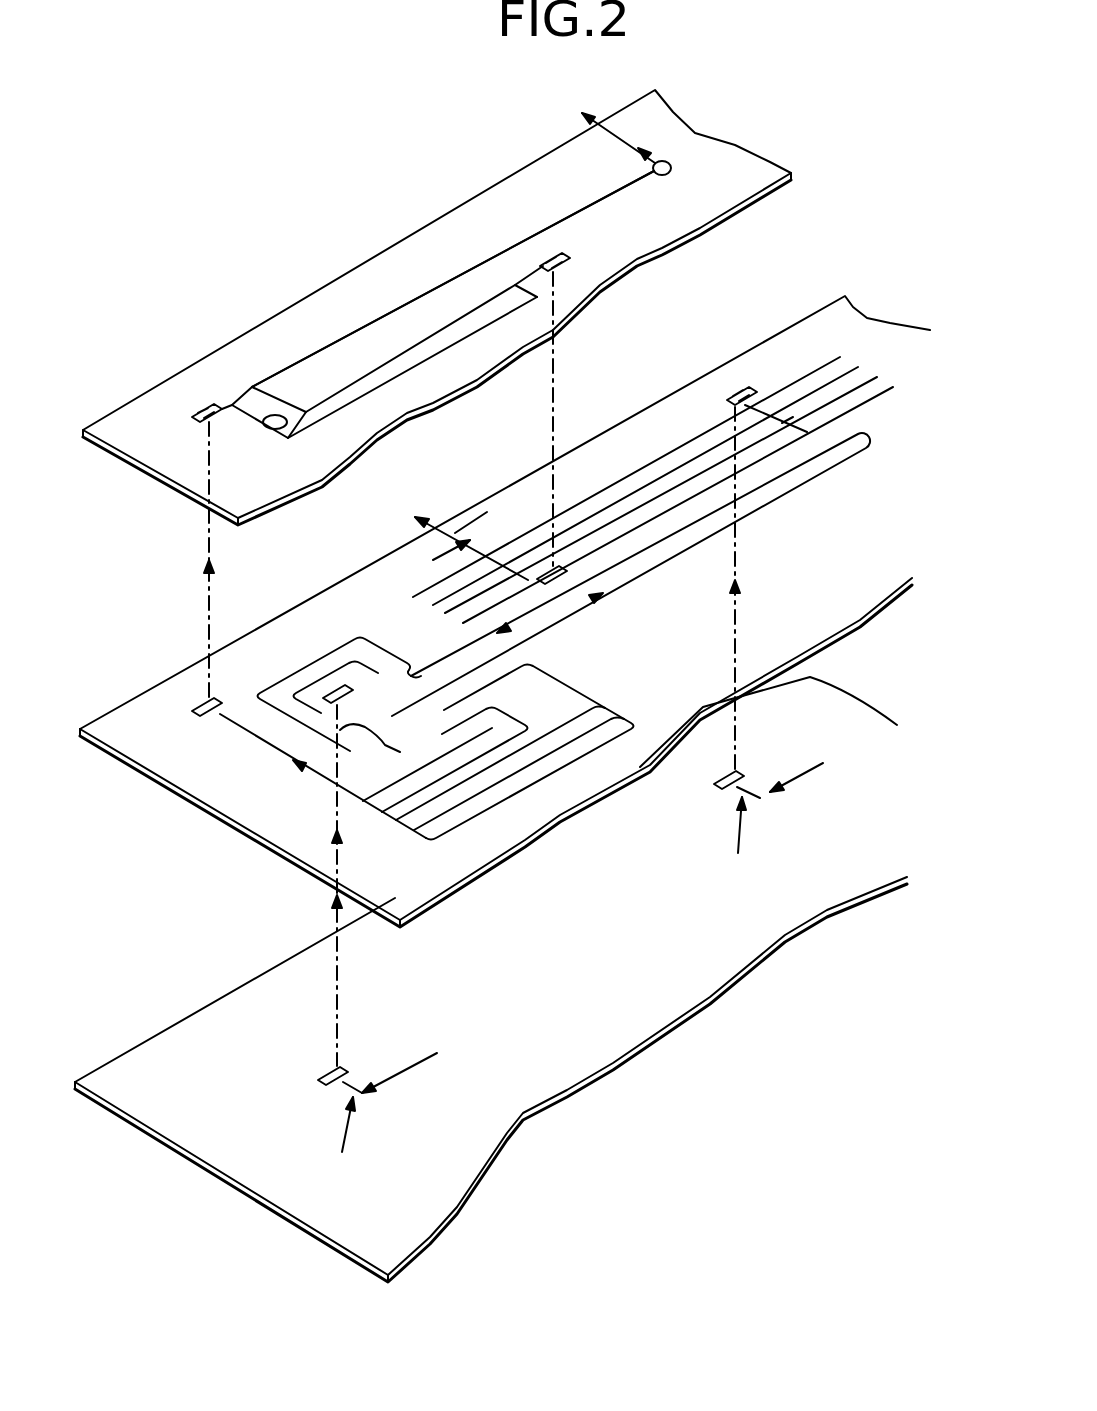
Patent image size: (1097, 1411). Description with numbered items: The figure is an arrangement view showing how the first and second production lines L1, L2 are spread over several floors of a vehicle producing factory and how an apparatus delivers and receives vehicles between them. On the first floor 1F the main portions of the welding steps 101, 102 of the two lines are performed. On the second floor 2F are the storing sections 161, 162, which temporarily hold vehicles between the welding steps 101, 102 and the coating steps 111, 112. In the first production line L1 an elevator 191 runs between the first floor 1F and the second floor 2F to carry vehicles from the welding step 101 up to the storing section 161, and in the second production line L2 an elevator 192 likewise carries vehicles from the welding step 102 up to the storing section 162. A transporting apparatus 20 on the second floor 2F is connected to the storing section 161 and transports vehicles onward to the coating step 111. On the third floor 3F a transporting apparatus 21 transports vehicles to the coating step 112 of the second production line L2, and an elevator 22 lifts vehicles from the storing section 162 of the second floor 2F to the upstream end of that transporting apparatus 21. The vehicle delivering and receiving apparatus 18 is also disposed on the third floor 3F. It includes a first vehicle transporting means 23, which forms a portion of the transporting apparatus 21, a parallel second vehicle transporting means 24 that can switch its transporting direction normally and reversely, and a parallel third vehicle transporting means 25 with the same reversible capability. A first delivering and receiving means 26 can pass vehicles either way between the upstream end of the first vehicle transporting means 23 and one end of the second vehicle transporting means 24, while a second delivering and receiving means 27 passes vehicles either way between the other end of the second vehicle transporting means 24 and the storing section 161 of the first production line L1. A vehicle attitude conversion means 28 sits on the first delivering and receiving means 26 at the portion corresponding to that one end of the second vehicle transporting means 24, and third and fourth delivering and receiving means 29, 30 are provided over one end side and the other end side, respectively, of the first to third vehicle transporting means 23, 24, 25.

The third floor 3F is at (437, 307).
The second floor 2F is at (505, 611).
The first floor 1F is at (491, 1079).
The vehicle delivering and receiving apparatus 18 is at (375, 332).
The transporting apparatus 21 is at (530, 249).
The fourth delivering and receiving means 30 is at (490, 277).
The first vehicle transporting means 23 is at (425, 308).
The second vehicle transporting means 24 is at (355, 380).
The third vehicle transporting means 25 is at (408, 368).
The third delivering and receiving means 29 is at (292, 403).
The vehicle attitude conversion means 28 is at (280, 430).
The first delivering and receiving means 26 is at (245, 432).
The elevator 22 is at (205, 637).
The second delivering and receiving means 27 is at (555, 368).
The storing section 161 is at (640, 468).
The storing section 162 is at (517, 803).
The transporting apparatus 20 is at (443, 562).
The elevator 191 is at (730, 727).
The elevator 192 is at (336, 922).
The welding step 101 is at (803, 780).
The welding step 102 is at (413, 1070).
The coating step 111 is at (448, 521).
The coating step 112 is at (510, 115).
The first production line L1 is at (737, 855).
The second production line L2 is at (341, 1145).